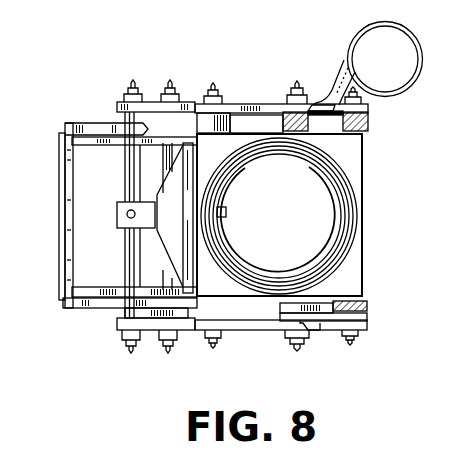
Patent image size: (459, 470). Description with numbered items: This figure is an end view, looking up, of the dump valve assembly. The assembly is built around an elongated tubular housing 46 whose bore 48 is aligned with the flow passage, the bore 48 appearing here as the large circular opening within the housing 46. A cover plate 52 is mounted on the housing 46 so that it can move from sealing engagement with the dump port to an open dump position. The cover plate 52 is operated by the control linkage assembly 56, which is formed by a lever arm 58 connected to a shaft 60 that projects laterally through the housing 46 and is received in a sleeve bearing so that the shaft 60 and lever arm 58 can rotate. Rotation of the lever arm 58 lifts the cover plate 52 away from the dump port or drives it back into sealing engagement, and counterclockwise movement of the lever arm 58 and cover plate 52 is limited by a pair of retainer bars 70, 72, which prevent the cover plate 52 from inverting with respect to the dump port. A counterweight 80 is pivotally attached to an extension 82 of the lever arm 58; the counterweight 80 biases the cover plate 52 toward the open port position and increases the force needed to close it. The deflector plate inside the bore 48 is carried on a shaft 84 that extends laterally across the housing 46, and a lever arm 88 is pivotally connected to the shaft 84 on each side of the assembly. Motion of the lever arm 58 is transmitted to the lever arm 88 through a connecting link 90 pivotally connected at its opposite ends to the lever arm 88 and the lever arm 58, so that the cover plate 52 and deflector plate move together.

The tubular housing 46 is at (362, 200).
The bore 48 is at (340, 208).
The cover plate 52 is at (165, 243).
The control linkage assembly 56 is at (169, 85).
The lever arm 58 is at (233, 102).
The shaft 60 is at (163, 162).
The retainer bar 70 is at (118, 145).
The retainer bar 72 is at (62, 127).
The counterweight 80 is at (391, 93).
The extension 82 is at (334, 90).
The deflector plate shaft 84 is at (214, 342).
The lever arm 88 is at (332, 118).
The connecting link 90 is at (325, 120).